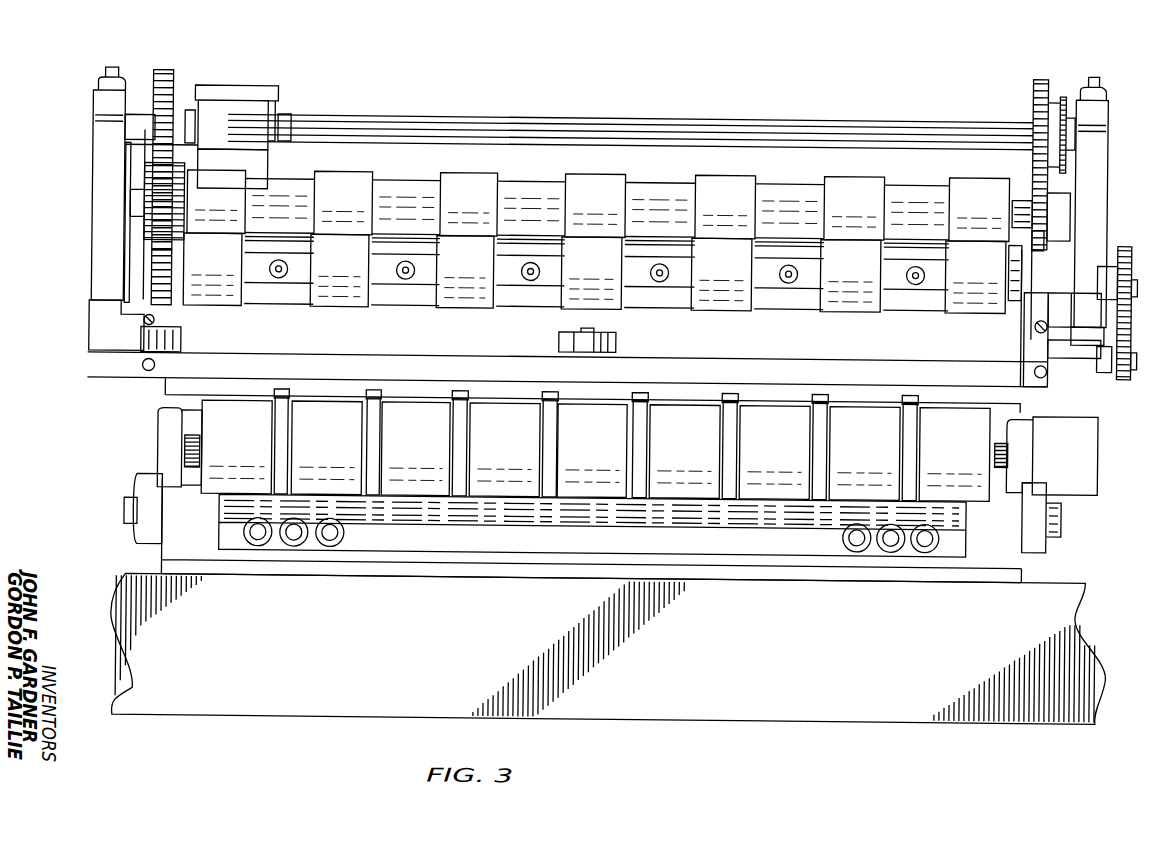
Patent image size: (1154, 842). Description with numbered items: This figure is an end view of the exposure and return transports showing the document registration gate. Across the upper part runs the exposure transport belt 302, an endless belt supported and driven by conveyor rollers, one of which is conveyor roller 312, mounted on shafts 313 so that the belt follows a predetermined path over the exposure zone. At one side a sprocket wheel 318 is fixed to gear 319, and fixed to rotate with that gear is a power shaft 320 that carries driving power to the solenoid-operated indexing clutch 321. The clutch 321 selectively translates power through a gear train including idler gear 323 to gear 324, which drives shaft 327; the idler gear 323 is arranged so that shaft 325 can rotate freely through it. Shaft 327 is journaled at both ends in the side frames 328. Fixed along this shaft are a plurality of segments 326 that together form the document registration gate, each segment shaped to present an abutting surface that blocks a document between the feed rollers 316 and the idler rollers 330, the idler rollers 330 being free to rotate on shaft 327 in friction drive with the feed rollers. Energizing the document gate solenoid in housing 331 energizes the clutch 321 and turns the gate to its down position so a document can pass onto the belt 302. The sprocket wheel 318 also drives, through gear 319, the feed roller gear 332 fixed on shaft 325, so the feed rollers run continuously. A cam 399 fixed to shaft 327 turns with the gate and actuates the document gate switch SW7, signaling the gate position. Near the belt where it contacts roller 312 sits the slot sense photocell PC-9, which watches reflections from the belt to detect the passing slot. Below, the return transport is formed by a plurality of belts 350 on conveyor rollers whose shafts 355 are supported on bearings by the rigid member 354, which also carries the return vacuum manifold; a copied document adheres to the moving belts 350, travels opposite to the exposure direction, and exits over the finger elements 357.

The exposure transport belt 302 is at (165, 393).
The conveyor roller 312 is at (1040, 382).
The shaft 313 is at (1083, 355).
The feed roller 316 is at (345, 176).
The sprocket wheel 318 is at (1060, 92).
The gear 319 is at (1032, 77).
The power shaft 320 is at (555, 117).
The indexing clutch 321 is at (268, 92).
The idler gear 323 is at (150, 196).
The gear 324 is at (165, 304).
The shaft 325 is at (125, 211).
The document registration gate segment 326 is at (388, 300).
The shaft 327 is at (1012, 284).
The side frame 328 is at (90, 171).
The idler roller 330 is at (476, 301).
The document gate solenoid housing 331 is at (255, 184).
The feed roller gear 332 is at (160, 75).
The return transport belt 350 is at (428, 414).
The rigid member 354 is at (165, 445).
The shaft 355 is at (1008, 450).
The finger element 357 is at (640, 397).
The cam 399 is at (1040, 233).
The slot sense photocell PC-9 is at (615, 345).
The document gate switch SW7 is at (1074, 456).